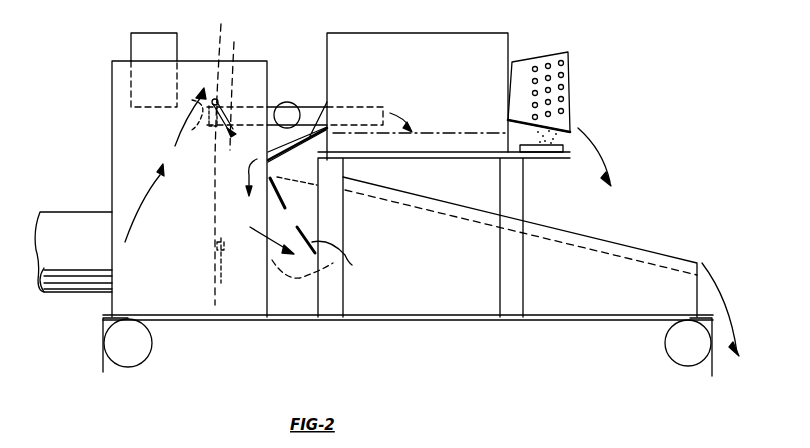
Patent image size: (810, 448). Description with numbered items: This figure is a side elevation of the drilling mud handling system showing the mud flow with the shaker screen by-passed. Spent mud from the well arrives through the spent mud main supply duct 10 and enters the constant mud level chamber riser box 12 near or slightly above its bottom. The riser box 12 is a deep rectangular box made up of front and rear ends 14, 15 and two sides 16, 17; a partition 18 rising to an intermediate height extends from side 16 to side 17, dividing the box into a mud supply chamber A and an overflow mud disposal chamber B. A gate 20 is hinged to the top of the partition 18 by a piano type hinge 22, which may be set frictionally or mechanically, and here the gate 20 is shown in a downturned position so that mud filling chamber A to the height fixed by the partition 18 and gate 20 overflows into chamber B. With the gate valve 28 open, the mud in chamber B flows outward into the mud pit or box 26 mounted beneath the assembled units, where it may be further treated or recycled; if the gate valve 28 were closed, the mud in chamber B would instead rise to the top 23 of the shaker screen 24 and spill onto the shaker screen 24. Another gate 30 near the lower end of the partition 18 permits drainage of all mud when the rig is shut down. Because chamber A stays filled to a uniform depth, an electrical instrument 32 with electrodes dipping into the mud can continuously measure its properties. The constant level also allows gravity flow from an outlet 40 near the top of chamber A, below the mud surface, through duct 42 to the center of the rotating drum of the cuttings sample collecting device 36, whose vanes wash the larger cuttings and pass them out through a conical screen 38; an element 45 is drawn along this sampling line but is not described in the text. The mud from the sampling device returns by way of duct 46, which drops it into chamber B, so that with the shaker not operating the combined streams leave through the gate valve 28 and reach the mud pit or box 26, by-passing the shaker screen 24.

The spent mud main supply duct 10 is at (73, 252).
The constant mud level chamber riser box 12 is at (102, 146).
The rear end 14 is at (112, 88).
The front end 15 is at (274, 212).
The side 16 is at (201, 61).
The side 17 is at (267, 63).
The partition 18 is at (213, 210).
The gate 20 is at (237, 44).
The piano type hinge 22 is at (223, 30).
The top of the shaker screen 23 is at (282, 188).
The shaker screen 24 is at (661, 252).
The mud pit or box 26 is at (353, 324).
The gate valve 28 is at (345, 262).
The gate 30 is at (217, 283).
The electrical instrument 32 is at (134, 37).
The cuttings sample collecting device 36 is at (505, 30).
The conical screen 38 is at (570, 52).
The outlet 40 is at (186, 131).
The duct 42 is at (359, 102).
The vibrator 45 is at (298, 105).
The duct 46 is at (318, 107).
The mud supply chamber A is at (155, 197).
The overflow mud disposal chamber B is at (242, 174).